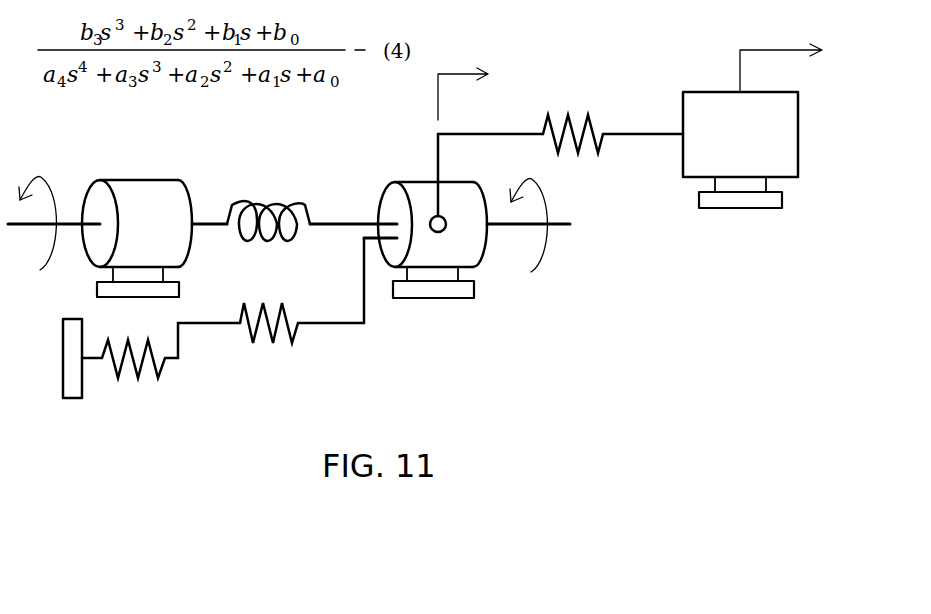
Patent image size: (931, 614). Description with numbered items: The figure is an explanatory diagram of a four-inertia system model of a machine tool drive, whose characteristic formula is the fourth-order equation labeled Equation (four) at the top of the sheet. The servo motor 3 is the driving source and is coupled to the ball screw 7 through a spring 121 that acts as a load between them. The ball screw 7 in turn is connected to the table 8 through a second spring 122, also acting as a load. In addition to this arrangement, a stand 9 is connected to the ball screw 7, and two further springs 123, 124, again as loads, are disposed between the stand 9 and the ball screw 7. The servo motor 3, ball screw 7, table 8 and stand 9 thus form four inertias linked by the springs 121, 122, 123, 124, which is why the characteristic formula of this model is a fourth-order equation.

The servo motor 3 is at (145, 180).
The ball screw 7 is at (406, 182).
The table 8 is at (702, 92).
The stand 9 is at (73, 398).
The spring 121 is at (277, 203).
The spring 122 is at (567, 115).
The spring 123 is at (158, 378).
The spring 124 is at (273, 343).